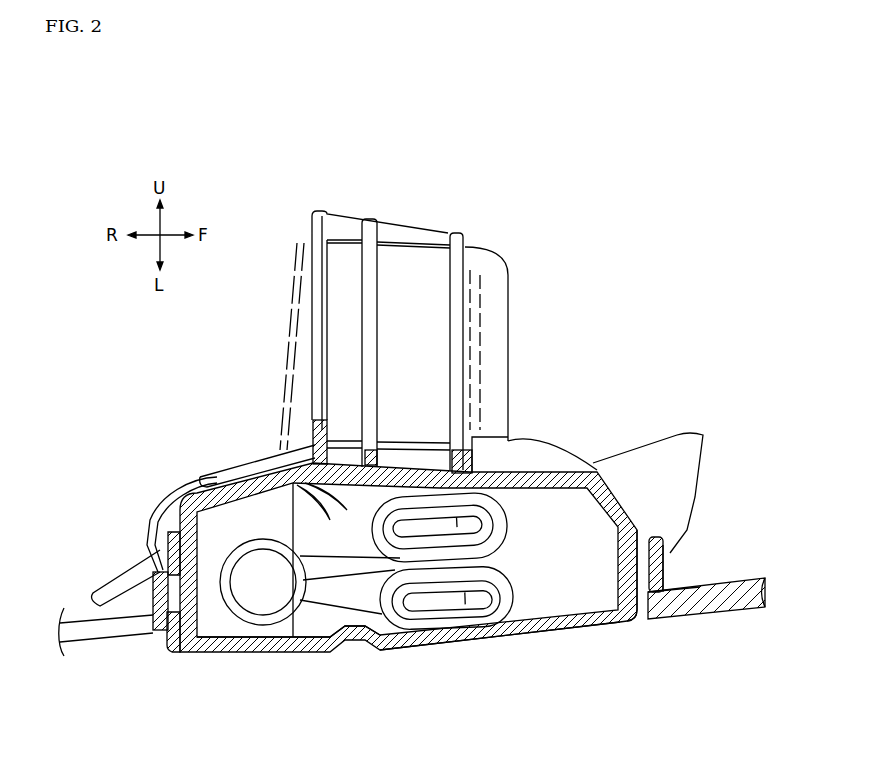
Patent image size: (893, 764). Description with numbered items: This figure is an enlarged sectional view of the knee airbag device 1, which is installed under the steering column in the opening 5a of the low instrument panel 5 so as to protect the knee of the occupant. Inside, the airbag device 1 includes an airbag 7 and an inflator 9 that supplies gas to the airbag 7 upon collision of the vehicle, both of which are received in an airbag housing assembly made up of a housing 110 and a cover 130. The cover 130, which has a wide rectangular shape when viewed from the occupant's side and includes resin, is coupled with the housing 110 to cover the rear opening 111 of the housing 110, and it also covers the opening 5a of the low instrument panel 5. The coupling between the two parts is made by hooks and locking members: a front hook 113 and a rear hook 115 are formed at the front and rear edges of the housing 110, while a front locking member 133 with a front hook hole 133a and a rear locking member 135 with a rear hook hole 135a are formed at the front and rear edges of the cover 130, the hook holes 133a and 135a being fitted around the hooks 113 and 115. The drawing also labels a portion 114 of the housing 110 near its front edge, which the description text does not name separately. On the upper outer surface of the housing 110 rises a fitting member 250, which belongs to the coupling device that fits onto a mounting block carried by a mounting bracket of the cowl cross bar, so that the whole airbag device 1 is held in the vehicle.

The airbag device 1 is at (433, 658).
The low instrument panel 5 is at (725, 625).
The opening 5a is at (650, 623).
The airbag 7 is at (510, 608).
The inflator 9 is at (262, 600).
The housing 110 is at (630, 623).
The rear opening 111 is at (612, 628).
The front hook 113 is at (667, 557).
The housing top 114 is at (540, 452).
The rear hook 115 is at (135, 638).
The cover 130 is at (300, 652).
The front locking member 133 is at (641, 527).
The front hook hole 133a is at (664, 538).
The rear locking member 135 is at (160, 553).
The rear hook hole 135a is at (170, 641).
The fitting member 250 is at (322, 328).